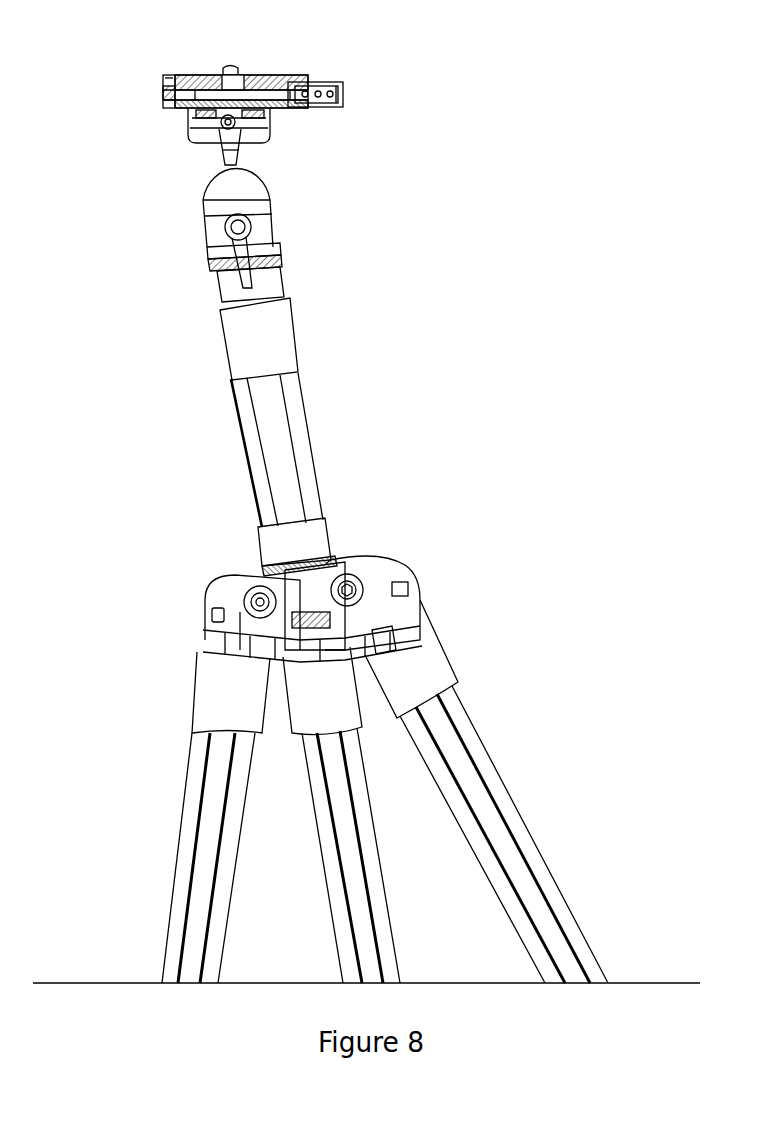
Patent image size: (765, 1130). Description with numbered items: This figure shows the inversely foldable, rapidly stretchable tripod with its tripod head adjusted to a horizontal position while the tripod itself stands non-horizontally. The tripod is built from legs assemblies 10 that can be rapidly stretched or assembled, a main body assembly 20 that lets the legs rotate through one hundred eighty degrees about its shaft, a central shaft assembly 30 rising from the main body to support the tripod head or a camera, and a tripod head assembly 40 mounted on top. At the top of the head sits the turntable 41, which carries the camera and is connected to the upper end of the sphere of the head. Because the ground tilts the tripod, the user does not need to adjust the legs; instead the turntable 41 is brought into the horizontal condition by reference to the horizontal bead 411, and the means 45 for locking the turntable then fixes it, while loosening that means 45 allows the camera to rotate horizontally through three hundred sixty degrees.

The legs assemblies 10 is at (228, 817).
The main body assembly 20 is at (333, 565).
The central shaft assembly 30 is at (287, 428).
The tripod head assembly 40 is at (270, 220).
The turntable 41 is at (163, 95).
The horizontal bead 411 is at (172, 76).
The means for locking the turntable 45 is at (207, 142).